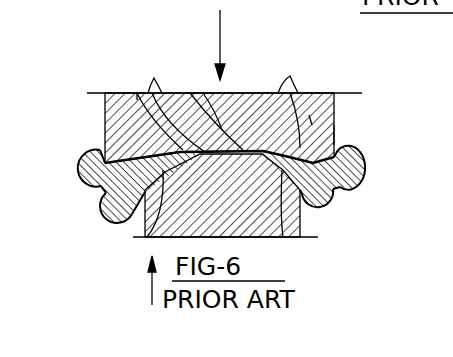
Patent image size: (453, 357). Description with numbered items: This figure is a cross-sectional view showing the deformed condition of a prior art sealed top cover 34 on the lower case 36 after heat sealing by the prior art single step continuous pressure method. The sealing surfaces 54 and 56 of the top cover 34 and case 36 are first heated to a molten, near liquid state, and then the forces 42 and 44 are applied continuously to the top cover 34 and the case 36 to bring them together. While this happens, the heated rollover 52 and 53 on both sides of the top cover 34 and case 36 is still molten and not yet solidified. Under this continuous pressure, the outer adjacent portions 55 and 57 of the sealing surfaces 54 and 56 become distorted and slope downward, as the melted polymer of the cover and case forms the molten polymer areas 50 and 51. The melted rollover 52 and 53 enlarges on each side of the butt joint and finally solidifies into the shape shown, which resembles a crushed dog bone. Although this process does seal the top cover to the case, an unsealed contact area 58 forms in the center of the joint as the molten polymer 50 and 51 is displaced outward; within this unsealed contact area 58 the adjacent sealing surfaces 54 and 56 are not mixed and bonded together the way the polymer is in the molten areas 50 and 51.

The top cover 34 is at (290, 135).
The lower case 36 is at (237, 200).
The force 42 is at (146, 284).
The force 44 is at (222, 29).
The molten polymer area 50 is at (105, 117).
The molten polymer area 51 is at (339, 133).
The rollover 52 is at (67, 156).
The rollover 53 is at (103, 217).
The sealing surface 54 is at (158, 88).
The outer adjacent portion 55 is at (137, 91).
The sealing surface 56 is at (263, 62).
The outer adjacent portion 57 is at (157, 238).
The unsealed contact area 58 is at (203, 91).